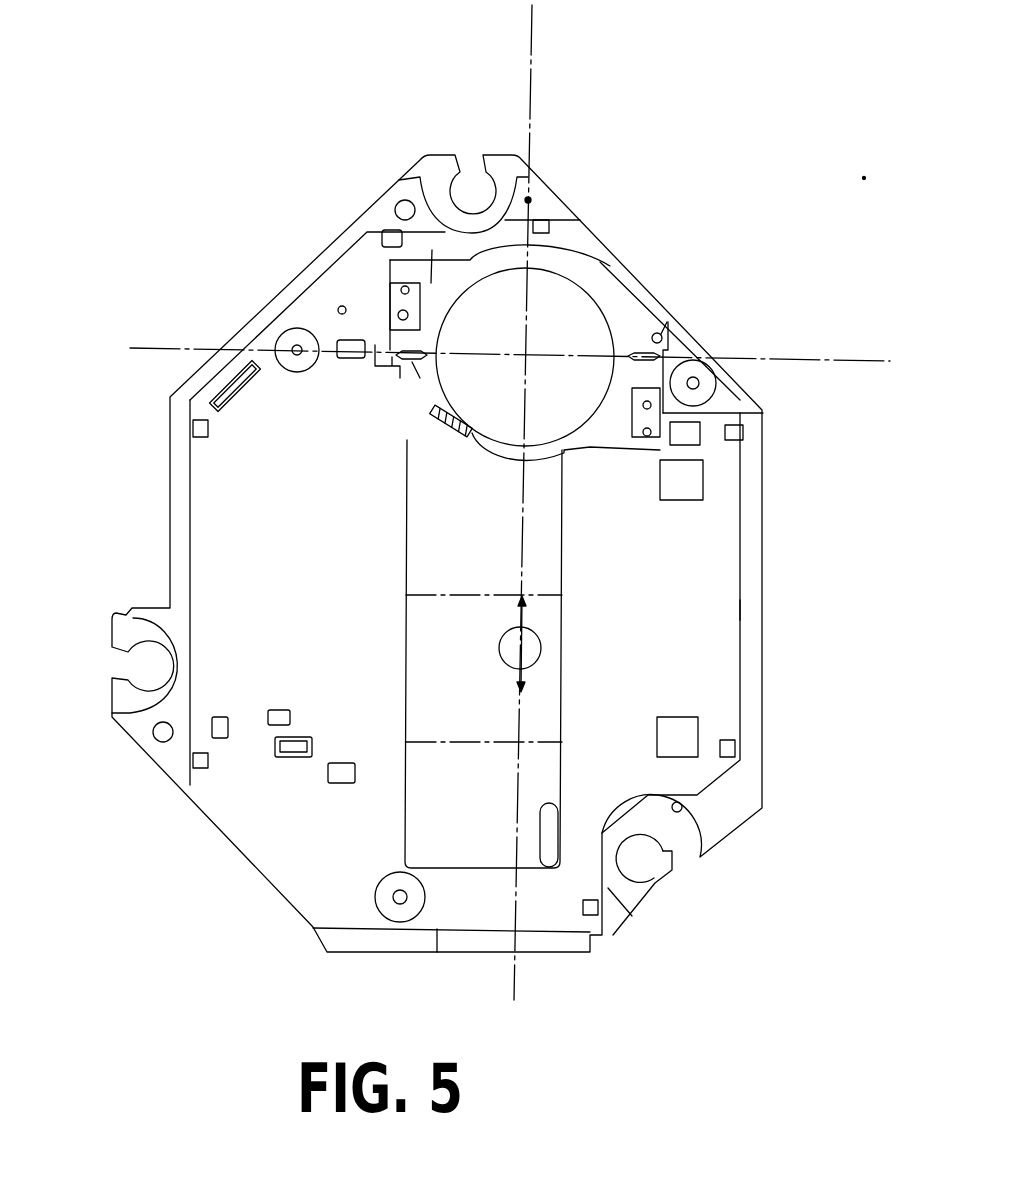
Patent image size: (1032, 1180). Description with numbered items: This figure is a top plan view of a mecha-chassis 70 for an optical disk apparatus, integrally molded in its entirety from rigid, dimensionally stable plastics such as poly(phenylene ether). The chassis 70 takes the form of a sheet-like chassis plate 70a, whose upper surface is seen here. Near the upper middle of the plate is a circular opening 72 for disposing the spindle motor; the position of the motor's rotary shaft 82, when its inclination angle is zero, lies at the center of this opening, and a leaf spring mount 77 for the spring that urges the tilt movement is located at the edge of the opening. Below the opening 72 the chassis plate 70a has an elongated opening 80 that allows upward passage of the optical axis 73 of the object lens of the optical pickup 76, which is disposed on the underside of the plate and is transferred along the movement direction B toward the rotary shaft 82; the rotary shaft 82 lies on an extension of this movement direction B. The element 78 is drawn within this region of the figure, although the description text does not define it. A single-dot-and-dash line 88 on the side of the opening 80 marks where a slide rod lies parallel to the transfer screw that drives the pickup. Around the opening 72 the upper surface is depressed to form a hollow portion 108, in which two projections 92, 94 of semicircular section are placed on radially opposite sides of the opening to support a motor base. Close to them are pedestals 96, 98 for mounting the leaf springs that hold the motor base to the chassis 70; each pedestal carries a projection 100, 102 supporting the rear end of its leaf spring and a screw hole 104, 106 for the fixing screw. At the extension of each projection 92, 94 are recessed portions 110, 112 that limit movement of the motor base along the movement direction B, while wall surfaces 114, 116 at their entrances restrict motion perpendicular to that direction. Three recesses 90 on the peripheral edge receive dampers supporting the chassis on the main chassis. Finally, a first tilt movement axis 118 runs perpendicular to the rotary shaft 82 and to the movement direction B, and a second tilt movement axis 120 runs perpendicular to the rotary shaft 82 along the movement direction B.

The chassis 70 is at (768, 563).
The chassis plate 70a is at (722, 608).
The circular opening 72 is at (556, 282).
The optical axis 73 is at (517, 657).
The optical pickup 76 is at (493, 748).
The leaf spring mount 77 is at (444, 436).
The carriage 78 is at (500, 636).
The opening 80 is at (545, 868).
The rotary shaft 82 is at (520, 360).
The single-dot-and-dash line 88 is at (690, 649).
The recesses 90 is at (452, 192).
The projection 92 is at (413, 365).
The projection 94 is at (667, 315).
The pedestal 96 is at (434, 250).
The pedestal 98 is at (653, 418).
The projection 100 is at (403, 285).
The projection 102 is at (667, 460).
The screw hole 104 is at (400, 287).
The screw hole 106 is at (763, 412).
The hollow portion 108 is at (620, 292).
The recessed portion 110 is at (380, 362).
The recessed portion 112 is at (700, 334).
The wall surface 114 is at (392, 320).
The wall surface 116 is at (635, 347).
The first tilt movement axis 118 is at (862, 352).
The second tilt movement axis 120 is at (532, 37).
The movement direction B is at (513, 677).